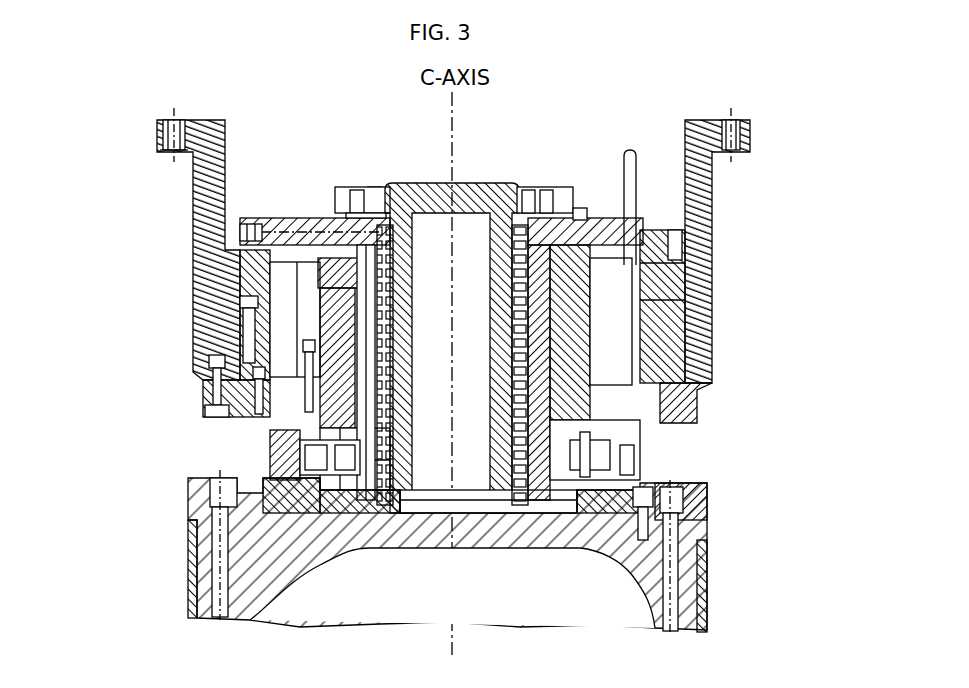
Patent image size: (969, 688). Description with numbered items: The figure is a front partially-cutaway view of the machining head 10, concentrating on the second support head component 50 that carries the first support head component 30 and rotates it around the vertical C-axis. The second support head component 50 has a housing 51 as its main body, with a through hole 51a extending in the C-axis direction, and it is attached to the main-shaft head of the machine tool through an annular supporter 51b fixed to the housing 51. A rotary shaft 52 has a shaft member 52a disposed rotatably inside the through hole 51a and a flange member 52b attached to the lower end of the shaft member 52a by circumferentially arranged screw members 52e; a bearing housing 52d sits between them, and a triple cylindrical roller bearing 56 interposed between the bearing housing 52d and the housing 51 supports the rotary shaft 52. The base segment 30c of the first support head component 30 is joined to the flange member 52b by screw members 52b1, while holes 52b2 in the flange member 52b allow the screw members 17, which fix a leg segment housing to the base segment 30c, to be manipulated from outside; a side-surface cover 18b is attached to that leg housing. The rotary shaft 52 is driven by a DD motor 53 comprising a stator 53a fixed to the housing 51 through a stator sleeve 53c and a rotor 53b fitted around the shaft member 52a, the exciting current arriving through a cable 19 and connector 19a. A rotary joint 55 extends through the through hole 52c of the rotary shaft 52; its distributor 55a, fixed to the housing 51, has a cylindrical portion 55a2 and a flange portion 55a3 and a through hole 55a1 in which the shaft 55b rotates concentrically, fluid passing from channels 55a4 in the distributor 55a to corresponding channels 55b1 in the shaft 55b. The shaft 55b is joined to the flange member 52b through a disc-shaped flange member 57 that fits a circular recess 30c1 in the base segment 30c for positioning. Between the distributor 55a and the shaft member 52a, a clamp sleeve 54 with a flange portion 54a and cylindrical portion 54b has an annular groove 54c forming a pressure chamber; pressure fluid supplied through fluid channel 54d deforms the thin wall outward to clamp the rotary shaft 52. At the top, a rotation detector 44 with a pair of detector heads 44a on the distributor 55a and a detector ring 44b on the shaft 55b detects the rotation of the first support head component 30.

The machining head 10 is at (152, 98).
The screw members 17 is at (672, 600).
The side-surface cover 18b is at (190, 570).
The cable 19 is at (636, 175).
The connector 19a is at (622, 268).
The first support head component 30 is at (453, 533).
The base segment 30c is at (293, 597).
The circular recess 30c1 is at (577, 523).
The rotation detector 44 is at (317, 155).
The detector heads 44a is at (355, 192).
The detector ring 44b is at (378, 200).
The second support head component 50 is at (578, 142).
The housing 51 is at (680, 424).
The through hole 51a is at (708, 386).
The annular supporter 51b is at (200, 190).
The rotary shaft 52 is at (198, 478).
The shaft member 52a is at (582, 393).
The flange member 52b is at (690, 485).
The screw members 52b1 is at (690, 522).
The holes 52b2 is at (215, 500).
The through hole 52c is at (333, 455).
The bearing housing 52d is at (400, 424).
The screw members 52e is at (515, 463).
The DD motor 53 is at (690, 349).
The stator 53a is at (680, 300).
The rotor 53b is at (588, 222).
The stator sleeve 53c is at (688, 270).
The clamp sleeve 54 is at (322, 262).
The flange portion 54a is at (250, 291).
The cylindrical portion 54b is at (250, 322).
The annular groove 54c is at (235, 353).
The fluid channel 54d is at (530, 213).
The rotary joint 55 is at (414, 259).
The distributor 55a is at (688, 245).
The through hole 55a1 is at (514, 222).
The cylindrical portion 55a2 is at (400, 338).
The flange portion 55a3 is at (300, 228).
The fluid channels 55a4 is at (400, 372).
The shaft 55b is at (465, 262).
The fluid channels 55b1 is at (400, 308).
The bearing 56 is at (272, 432).
The flange member 57 is at (378, 548).